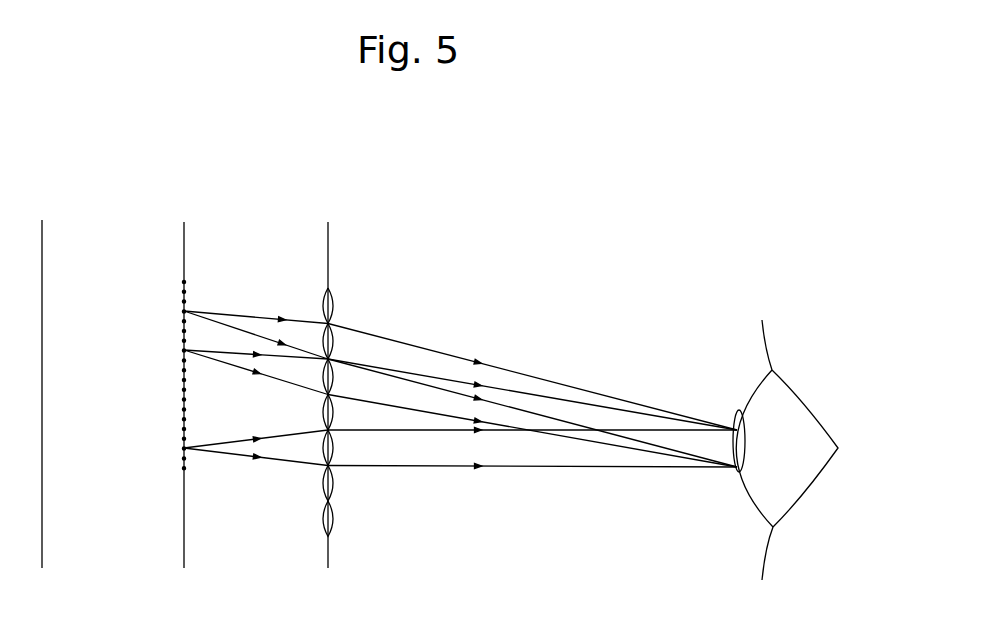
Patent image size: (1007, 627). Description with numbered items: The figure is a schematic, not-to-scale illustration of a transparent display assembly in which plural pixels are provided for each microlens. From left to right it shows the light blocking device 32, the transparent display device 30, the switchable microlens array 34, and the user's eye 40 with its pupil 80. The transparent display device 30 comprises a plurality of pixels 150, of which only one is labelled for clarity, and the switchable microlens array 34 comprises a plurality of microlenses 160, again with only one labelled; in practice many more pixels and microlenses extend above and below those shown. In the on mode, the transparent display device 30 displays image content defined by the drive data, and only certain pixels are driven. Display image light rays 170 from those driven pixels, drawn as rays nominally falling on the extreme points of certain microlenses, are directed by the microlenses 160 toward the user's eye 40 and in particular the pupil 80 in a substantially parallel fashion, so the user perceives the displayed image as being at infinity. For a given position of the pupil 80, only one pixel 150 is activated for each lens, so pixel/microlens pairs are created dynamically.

The light blocking device 32 is at (42, 231).
The transparent display device 30 is at (184, 236).
The pixel 150 is at (184, 282).
The switchable microlens array 34 is at (328, 236).
The microlens 160 is at (333, 303).
The display image light rays 170 is at (530, 377).
The pupil 80 is at (743, 408).
The user's eye 40 is at (787, 393).